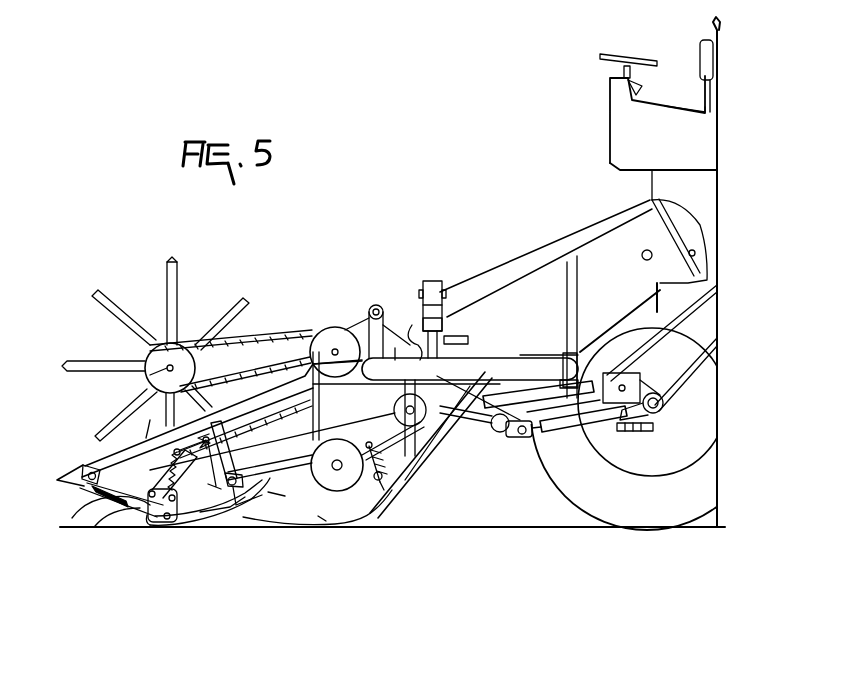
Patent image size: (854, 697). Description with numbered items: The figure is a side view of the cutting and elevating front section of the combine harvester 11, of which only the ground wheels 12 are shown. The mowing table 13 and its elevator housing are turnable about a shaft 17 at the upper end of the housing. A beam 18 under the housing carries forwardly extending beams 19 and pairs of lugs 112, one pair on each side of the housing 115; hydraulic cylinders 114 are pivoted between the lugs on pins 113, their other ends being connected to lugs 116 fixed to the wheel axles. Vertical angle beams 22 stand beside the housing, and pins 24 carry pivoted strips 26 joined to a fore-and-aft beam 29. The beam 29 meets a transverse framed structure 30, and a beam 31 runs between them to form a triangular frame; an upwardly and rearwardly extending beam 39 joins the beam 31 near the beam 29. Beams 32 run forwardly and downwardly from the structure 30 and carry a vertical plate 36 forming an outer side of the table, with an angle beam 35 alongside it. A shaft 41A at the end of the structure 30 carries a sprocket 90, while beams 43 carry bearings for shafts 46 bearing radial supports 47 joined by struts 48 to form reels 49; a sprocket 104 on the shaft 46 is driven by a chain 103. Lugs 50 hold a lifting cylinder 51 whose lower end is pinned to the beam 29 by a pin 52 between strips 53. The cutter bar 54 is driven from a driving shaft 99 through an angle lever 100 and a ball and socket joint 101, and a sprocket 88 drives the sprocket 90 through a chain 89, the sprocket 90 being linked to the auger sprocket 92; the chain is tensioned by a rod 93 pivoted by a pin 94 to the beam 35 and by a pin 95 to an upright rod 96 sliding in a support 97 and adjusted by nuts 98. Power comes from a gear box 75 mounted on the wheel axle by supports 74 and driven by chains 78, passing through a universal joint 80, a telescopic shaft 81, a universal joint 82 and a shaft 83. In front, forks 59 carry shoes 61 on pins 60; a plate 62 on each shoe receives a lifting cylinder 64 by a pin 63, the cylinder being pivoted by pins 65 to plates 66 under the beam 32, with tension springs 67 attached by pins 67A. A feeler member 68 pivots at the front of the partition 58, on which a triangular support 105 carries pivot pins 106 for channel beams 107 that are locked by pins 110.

The tractor 11 is at (608, 148).
The ground wheels 12 is at (578, 509).
The mowing table 13 is at (356, 526).
The shaft 17 is at (647, 260).
The beam 18 is at (504, 436).
The beams 19 is at (490, 430).
The angle beams 22 is at (580, 265).
The pins 24 is at (562, 381).
The strips 26 is at (566, 361).
The beam 29 is at (536, 356).
The framed structure 30 is at (336, 384).
The beam 31 is at (470, 366).
The beams 32 is at (113, 456).
The angle beam 35 is at (246, 437).
The vertical plate 36 is at (322, 525).
The beam 39 is at (428, 455).
The shaft 41A is at (356, 326).
The beams 43 is at (278, 331).
The shafts 46 is at (145, 385).
The radial supports 47 is at (178, 298).
The struts 48 is at (166, 267).
The reels 49 is at (95, 361).
The lugs 50 is at (395, 344).
The lifting cylinder 51 is at (369, 312).
The pin 52 is at (378, 305).
The strips 53 is at (390, 328).
The cutter bars 54 is at (205, 518).
The partition 58 is at (533, 266).
The forks 59 is at (95, 438).
The pins 60 is at (70, 478).
The shoes 61 is at (225, 524).
The plate 62 is at (153, 523).
The pin 63 is at (169, 522).
The lifting cylinder 64 is at (156, 512).
The pins 65 is at (215, 440).
The plates 66 is at (146, 418).
The tension springs 67 is at (145, 478).
The pins 67A is at (165, 458).
The feeler member 68 is at (76, 520).
The supports 74 is at (640, 374).
The gear box 75 is at (642, 372).
The chains 78 is at (684, 352).
The universal joint 80 is at (596, 352).
The telescopic intermediate shaft 81 is at (506, 398).
The universal joint 82 is at (462, 412).
The shaft 83 is at (458, 386).
The sprocket 88 is at (394, 410).
The chain 89 is at (305, 431).
The sprocket 90 is at (335, 349).
The sprocket 92 is at (322, 507).
The rod 93 is at (296, 466).
The pin 94 is at (281, 500).
The pin 95 is at (393, 437).
The upright rod 96 is at (337, 465).
The support 97 is at (374, 472).
The nuts 98 is at (382, 494).
The driving shaft 99 is at (325, 396).
The angle lever 100 is at (236, 464).
The ball and socket joint 101 is at (188, 466).
The chain 103 is at (238, 338).
The sprocket 104 is at (165, 343).
The triangular support 105 is at (450, 346).
The pivot pins 106 is at (444, 318).
The channel beam 107 is at (433, 281).
The pins 110 is at (412, 325).
The lugs 112 is at (520, 438).
The pins 113 is at (535, 438).
The hydraulic cylinders 114 is at (580, 432).
The housing 115 is at (630, 432).
The lugs 116 is at (652, 418).